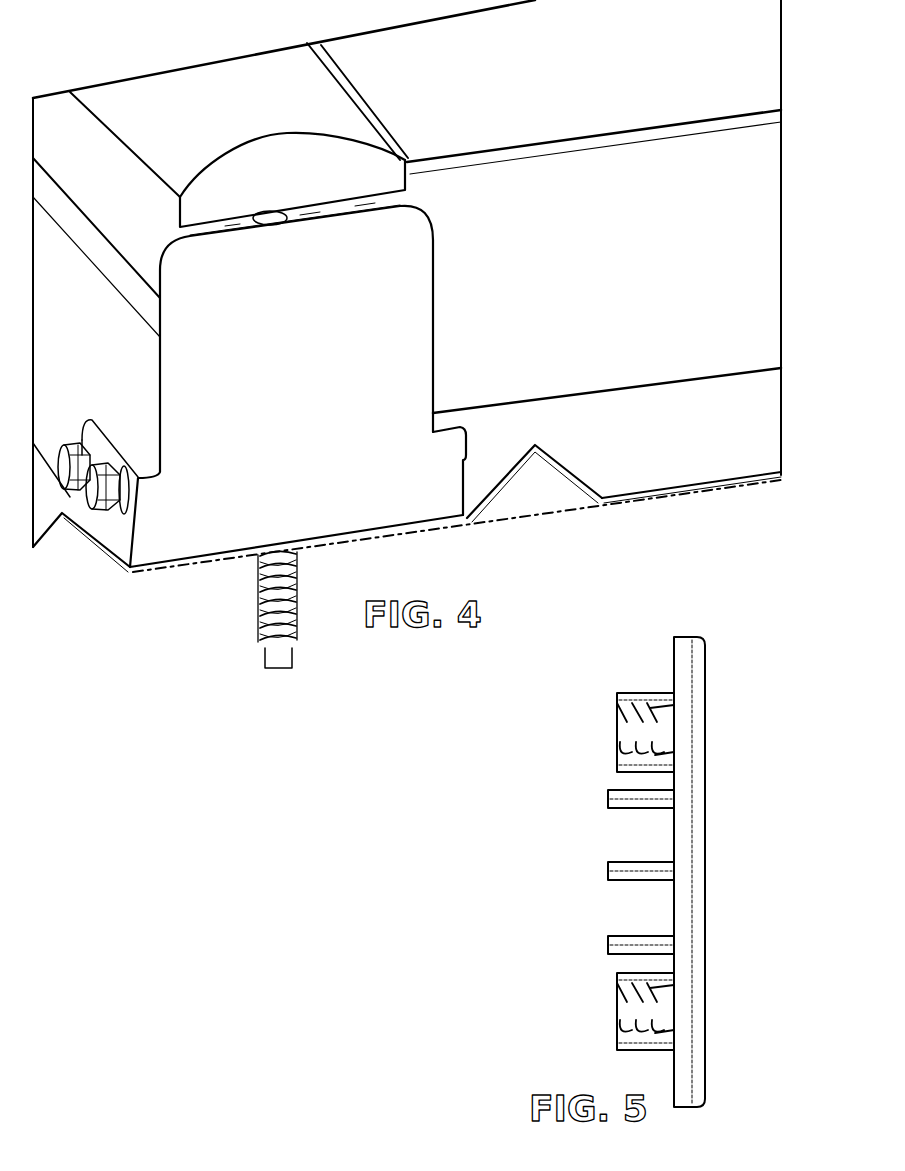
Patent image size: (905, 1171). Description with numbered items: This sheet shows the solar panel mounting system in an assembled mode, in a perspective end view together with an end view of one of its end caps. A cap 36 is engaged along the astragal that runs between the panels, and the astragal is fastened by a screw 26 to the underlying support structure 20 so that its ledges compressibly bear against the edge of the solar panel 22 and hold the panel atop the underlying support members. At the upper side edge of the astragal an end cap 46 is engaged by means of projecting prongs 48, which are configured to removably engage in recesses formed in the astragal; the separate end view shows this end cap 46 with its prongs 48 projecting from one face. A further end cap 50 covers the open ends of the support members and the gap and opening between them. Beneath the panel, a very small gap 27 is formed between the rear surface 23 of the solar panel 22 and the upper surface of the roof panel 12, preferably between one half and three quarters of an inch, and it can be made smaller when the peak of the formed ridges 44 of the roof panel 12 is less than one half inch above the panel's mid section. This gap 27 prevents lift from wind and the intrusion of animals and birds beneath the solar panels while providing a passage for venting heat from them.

In FIG. 4, the roof panel 12 is at (510, 513).
In FIG. 4, the support structure 20 is at (573, 510).
In FIG. 4, the solar panel 22 is at (380, 47).
In FIG. 4, the rear surface 23 is at (678, 388).
In FIG. 4, the screw 26 is at (258, 630).
In FIG. 4, the gap 27 is at (745, 403).
In FIG. 4, the cap 36 is at (167, 103).
In FIG. 4, the formed ridges 44 is at (540, 447).
In FIG. 4, the end cap 46 is at (342, 163).
In FIG. 5, the end cap 46 is at (700, 670).
In FIG. 5, the prongs 48 is at (627, 700).
In FIG. 4, the end cap 50 is at (385, 360).